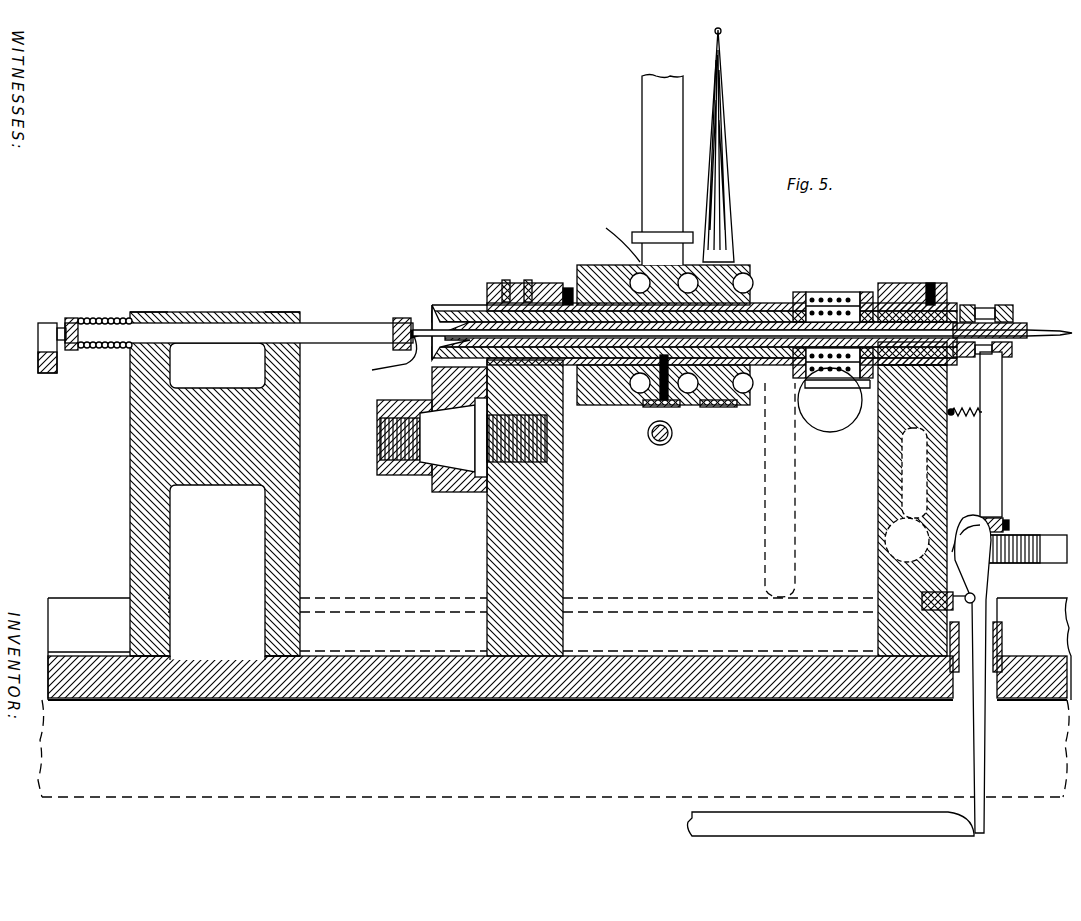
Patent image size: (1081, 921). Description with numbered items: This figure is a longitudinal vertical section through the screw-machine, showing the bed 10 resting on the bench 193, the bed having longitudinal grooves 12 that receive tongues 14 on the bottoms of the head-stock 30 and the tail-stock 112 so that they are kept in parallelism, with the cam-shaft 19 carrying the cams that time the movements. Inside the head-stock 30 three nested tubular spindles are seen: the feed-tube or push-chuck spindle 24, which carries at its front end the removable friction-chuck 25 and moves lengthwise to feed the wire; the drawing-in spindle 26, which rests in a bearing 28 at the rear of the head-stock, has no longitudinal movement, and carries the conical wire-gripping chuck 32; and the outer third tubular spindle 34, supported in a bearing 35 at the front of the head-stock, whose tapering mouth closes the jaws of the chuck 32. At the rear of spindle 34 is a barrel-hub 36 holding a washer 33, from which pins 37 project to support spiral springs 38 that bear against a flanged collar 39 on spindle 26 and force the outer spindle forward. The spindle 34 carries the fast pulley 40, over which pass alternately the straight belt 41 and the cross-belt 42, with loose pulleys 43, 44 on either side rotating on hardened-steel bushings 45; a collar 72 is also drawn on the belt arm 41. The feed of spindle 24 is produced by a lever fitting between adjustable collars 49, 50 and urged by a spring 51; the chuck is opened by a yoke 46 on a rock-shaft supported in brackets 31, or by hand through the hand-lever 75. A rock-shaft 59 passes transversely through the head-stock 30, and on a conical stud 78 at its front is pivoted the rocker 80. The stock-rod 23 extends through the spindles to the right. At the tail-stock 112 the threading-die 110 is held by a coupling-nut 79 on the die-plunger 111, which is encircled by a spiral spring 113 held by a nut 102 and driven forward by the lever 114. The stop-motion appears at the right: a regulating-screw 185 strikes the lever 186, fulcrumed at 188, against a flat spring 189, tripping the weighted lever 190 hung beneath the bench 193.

The bed 10 is at (462, 649).
The longitudinal parallel grooves 12 is at (80, 652).
The tongues 14 is at (170, 654).
The cam-shaft 19 is at (557, 678).
The rod 23 is at (1052, 322).
The feed-tube or push-chuck spindle 24 is at (1010, 323).
The friction-chuck 25 is at (567, 288).
The drawing-in spindle 26 is at (517, 284).
The bearing 28 is at (948, 307).
The head-stock 30 is at (912, 510).
The brackets 31 is at (833, 395).
The wire-gripping chuck 32 is at (468, 318).
The washer 33 is at (835, 292).
The third tubular spindle 34 is at (440, 320).
The bearing 35 is at (492, 300).
The barrel-hub 36 is at (797, 292).
The pins 37 is at (890, 282).
The spiral springs 38 is at (832, 422).
The flanged collar 39 is at (878, 290).
The fast pulley 40 is at (612, 238).
The straight belt 41 is at (625, 446).
The cross-belt 42 is at (742, 222).
The loose pulley 43 is at (742, 246).
The loose pulley 44 is at (630, 268).
The hardened-steel bushings 45 is at (748, 283).
The yoke 46 is at (775, 405).
The collar 49 is at (965, 358).
The collar 50 is at (1015, 368).
The spring 51 is at (966, 418).
The rock-shaft 59 is at (658, 447).
The collar 72 is at (662, 237).
The hand-lever 75 is at (1035, 534).
The conical stud 78 is at (432, 437).
The coupling-nut 79 is at (392, 318).
The rocker 80 is at (459, 429).
The nut 102 is at (67, 316).
The threading-die 110 is at (391, 357).
The die-plunger 111 is at (230, 321).
The tail-stock 112 is at (215, 486).
The spiral spring 113 is at (103, 320).
The lever 114 is at (37, 340).
The regulating-screw 185 is at (1012, 520).
The lever 186 is at (988, 578).
The fulcrum 188 is at (980, 606).
The flat spring 189 is at (961, 517).
The weighted lever 190 is at (831, 824).
The bench 193 is at (553, 748).